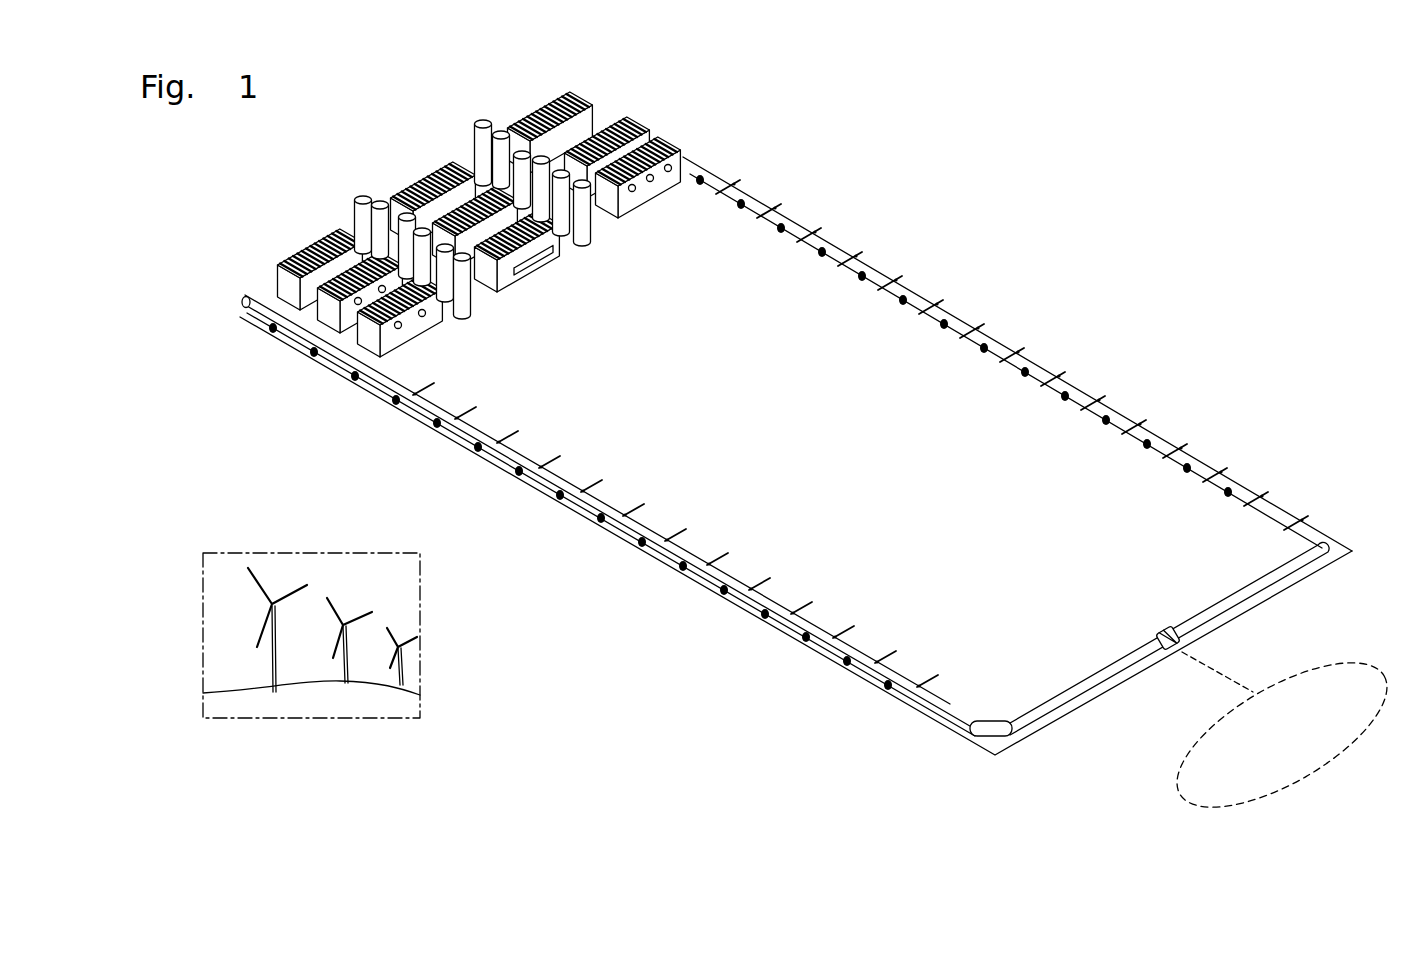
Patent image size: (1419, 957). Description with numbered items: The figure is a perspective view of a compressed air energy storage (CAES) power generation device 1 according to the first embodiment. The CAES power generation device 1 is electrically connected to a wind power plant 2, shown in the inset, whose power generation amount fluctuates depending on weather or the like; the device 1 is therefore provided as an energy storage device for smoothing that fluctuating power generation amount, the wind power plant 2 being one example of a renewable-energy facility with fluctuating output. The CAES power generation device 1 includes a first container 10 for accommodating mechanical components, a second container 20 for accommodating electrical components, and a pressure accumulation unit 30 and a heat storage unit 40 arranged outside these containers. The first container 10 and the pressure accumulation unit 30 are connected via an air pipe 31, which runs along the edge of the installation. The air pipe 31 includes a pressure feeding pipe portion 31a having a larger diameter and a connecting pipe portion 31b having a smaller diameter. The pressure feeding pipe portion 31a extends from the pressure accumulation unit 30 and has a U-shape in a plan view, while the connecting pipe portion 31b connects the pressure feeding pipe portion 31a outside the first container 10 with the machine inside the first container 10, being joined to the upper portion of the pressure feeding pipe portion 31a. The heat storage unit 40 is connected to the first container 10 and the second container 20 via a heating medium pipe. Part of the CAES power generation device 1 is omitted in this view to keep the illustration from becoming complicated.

The compressed air energy storage power generation device 1 is at (1035, 167).
The wind power plant 2 is at (363, 720).
The first container 10 is at (637, 128).
The second container 20 is at (433, 157).
The pressure accumulation unit 30 is at (1315, 740).
The air pipe 31 is at (797, 510).
The pressure feeding pipe portion 31a is at (962, 718).
The connecting pipe portion 31b is at (927, 667).
The heat storage unit 40 is at (596, 237).